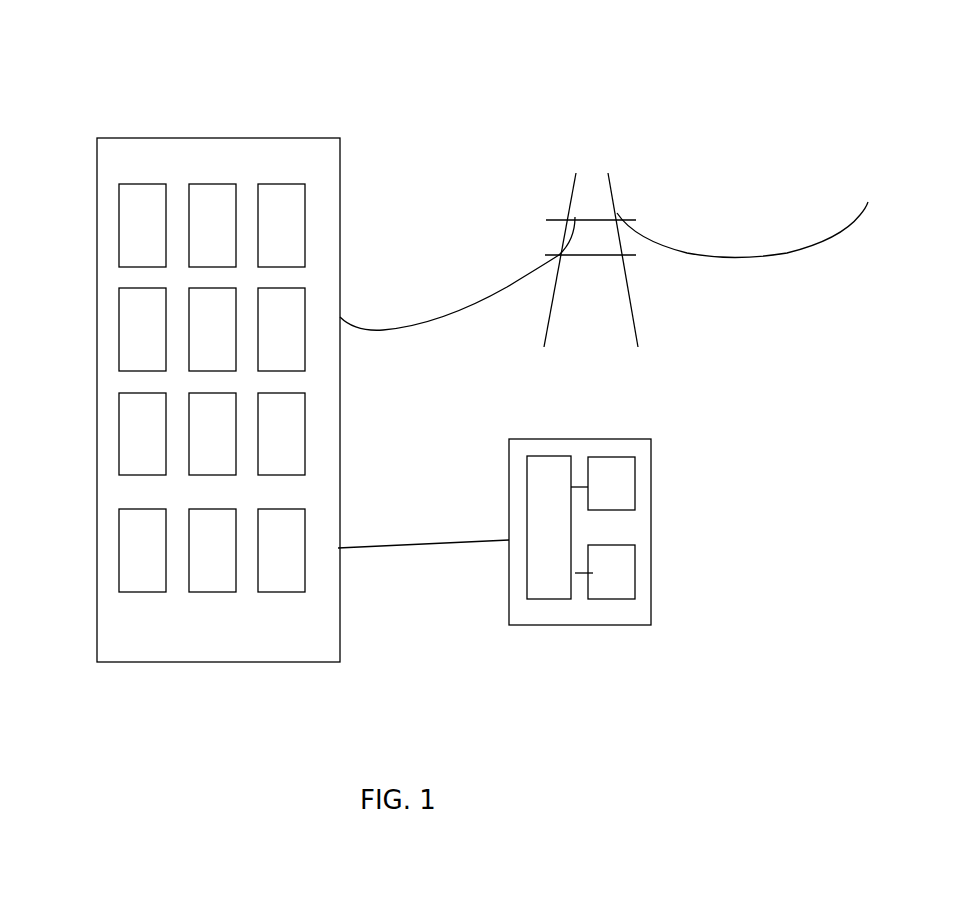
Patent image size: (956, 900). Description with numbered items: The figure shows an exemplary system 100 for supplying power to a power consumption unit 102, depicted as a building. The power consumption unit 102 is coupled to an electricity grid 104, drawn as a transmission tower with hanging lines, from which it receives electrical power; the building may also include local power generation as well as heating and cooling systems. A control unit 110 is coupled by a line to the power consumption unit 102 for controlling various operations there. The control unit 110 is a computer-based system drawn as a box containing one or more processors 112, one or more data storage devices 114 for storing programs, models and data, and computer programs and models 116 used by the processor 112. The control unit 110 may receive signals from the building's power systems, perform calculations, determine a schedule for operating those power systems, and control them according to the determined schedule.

The system 100 is at (123, 54).
The power consumption unit 102 is at (218, 136).
The electricity grid 104 is at (563, 175).
The control unit 110 is at (649, 520).
The processor 112 is at (527, 497).
The data storage device 114 is at (613, 475).
The computer programs and models 116 is at (625, 578).